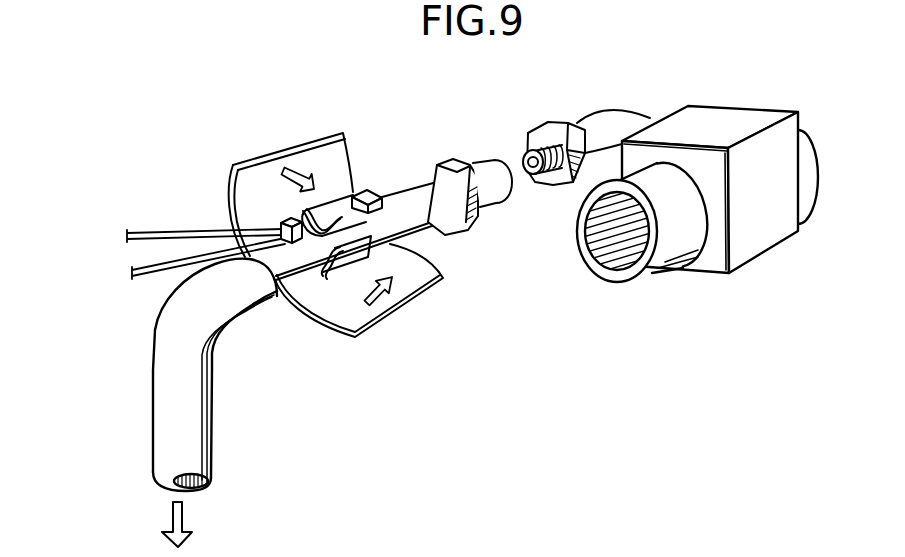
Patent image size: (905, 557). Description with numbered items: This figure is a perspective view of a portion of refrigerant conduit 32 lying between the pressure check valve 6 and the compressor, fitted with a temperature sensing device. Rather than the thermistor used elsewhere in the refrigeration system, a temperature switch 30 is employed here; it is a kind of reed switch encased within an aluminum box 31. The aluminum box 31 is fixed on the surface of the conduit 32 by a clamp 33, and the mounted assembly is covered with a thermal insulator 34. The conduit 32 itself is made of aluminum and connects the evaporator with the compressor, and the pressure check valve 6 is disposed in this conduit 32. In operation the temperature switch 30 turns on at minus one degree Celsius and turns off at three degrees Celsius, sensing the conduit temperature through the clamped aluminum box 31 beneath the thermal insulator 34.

The pressure check valve 6 is at (735, 127).
The temperature switch 30 is at (380, 197).
The aluminum box 31 is at (283, 232).
The conduit 32 is at (291, 280).
The clamp 33 is at (335, 199).
The thermal insulator 34 is at (362, 317).